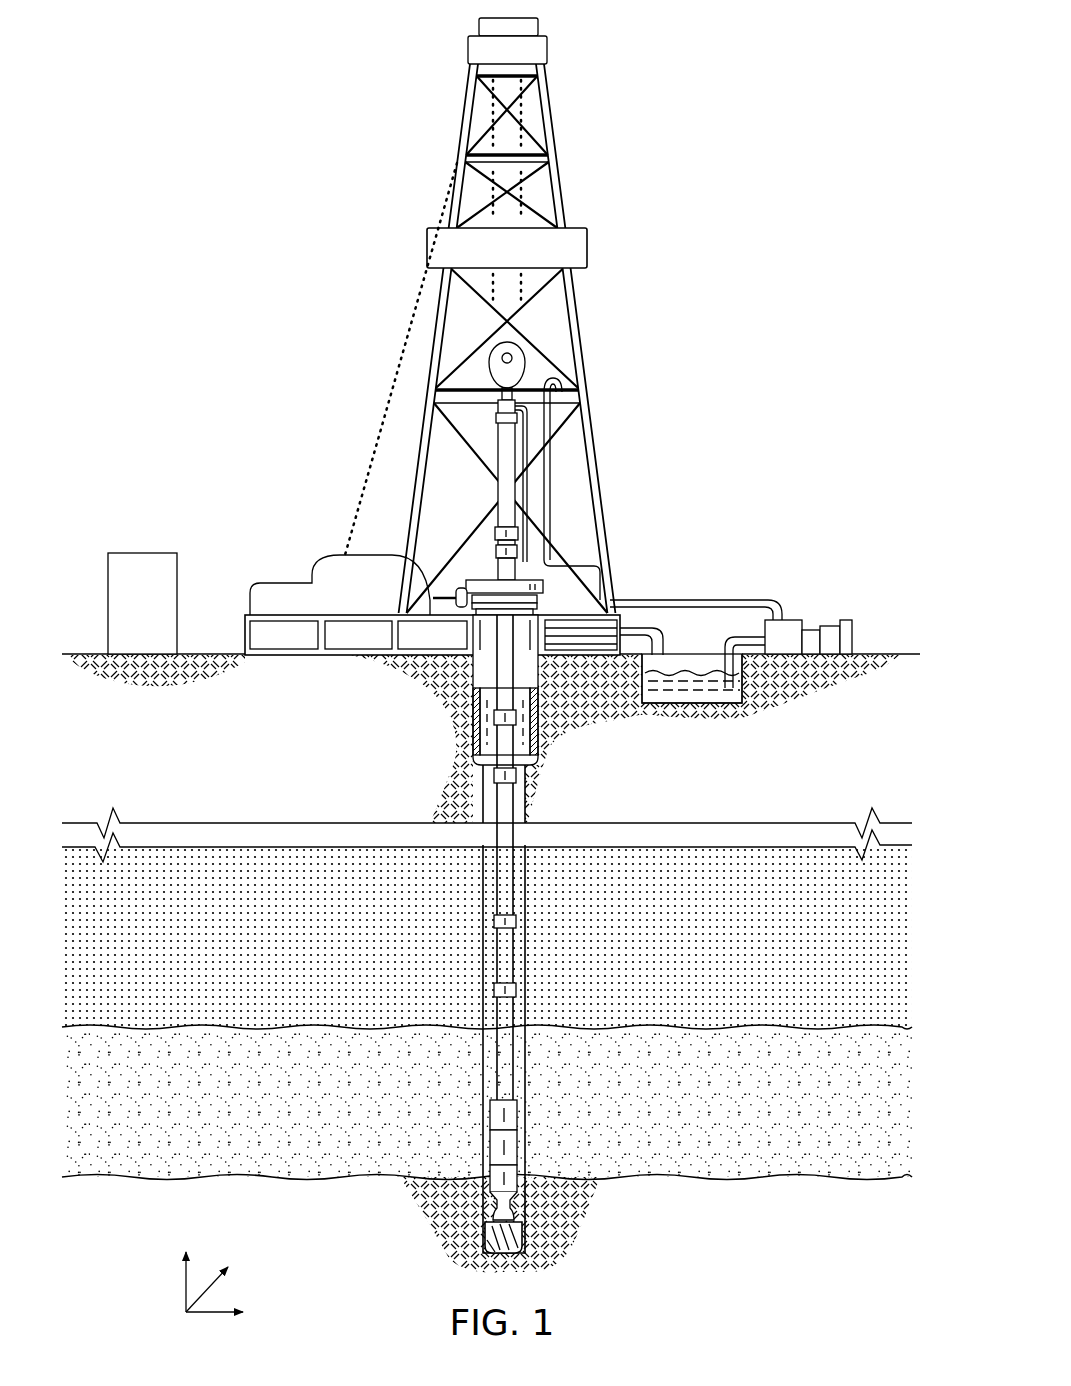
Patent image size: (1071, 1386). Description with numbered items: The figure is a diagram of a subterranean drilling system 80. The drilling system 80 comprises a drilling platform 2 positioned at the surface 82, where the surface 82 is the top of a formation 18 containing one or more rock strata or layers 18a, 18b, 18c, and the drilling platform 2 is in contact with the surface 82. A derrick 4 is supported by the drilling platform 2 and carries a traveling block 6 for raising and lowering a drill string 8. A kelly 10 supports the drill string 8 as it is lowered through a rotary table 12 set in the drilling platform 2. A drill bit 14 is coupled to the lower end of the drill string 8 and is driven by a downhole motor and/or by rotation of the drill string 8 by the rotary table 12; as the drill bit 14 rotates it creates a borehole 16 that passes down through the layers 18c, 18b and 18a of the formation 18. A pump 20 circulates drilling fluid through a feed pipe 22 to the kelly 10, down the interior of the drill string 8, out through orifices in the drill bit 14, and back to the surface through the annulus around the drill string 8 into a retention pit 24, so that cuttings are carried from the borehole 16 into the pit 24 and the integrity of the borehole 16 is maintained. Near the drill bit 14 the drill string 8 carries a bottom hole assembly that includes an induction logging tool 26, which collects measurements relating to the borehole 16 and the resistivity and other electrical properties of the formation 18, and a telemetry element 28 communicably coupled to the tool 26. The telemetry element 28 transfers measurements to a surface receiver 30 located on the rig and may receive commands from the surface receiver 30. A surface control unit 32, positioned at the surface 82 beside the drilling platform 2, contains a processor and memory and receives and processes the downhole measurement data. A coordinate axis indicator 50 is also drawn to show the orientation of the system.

The subterranean drilling system 80 is at (296, 198).
The derrick 4 is at (560, 146).
The traveling block 6 is at (521, 365).
The kelly 10 is at (493, 437).
The surface receiver 30 is at (520, 533).
The rotary table 12 is at (487, 574).
The drilling platform 2 is at (245, 634).
The surface control unit 32 is at (157, 617).
The surface 82 is at (90, 653).
The feed pipe 22 is at (690, 598).
The pump 20 is at (790, 620).
The retention pit 24 is at (680, 682).
The drill string 8 is at (514, 800).
The borehole 16 is at (521, 888).
The formation 18 is at (519, 918).
The rock layer 18a is at (487, 1104).
The rock layer 18b is at (670, 952).
The rock layer 18c is at (670, 782).
The telemetry element 28 is at (494, 1113).
The induction logging tool 26 is at (494, 1147).
The drill bit 14 is at (530, 1240).
The coordinate system 50 is at (186, 1288).